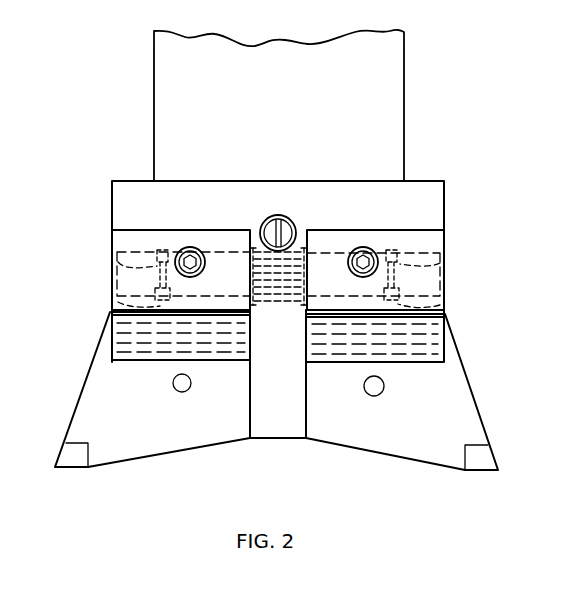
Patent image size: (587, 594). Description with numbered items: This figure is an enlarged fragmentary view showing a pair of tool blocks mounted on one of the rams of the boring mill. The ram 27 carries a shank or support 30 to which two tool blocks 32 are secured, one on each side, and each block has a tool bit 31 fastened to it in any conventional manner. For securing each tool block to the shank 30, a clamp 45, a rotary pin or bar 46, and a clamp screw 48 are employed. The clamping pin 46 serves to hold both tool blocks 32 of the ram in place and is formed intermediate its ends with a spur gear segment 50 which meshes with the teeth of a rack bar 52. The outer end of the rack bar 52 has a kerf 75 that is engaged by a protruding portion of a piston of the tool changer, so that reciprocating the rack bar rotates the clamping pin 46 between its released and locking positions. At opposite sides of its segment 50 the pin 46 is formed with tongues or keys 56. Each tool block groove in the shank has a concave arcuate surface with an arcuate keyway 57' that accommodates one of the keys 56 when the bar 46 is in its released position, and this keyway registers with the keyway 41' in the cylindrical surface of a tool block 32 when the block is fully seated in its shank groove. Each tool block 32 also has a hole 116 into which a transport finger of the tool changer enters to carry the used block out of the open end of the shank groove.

The ram 27 is at (398, 128).
The clamp 45 is at (112, 238).
The rotary pin or bar 46 is at (440, 243).
The clamp screw 48 is at (203, 270).
The tongues or keys 56 is at (162, 250).
The arcuate keyway 57' is at (279, 268).
The arcuate groove or keyway 41' is at (276, 312).
The rack bar 52 is at (298, 212).
The kerf 75 is at (262, 222).
The spur gear segment 50 is at (279, 308).
The shank or support 30 is at (284, 428).
The tool block 32 is at (75, 402).
The tool bit 31 is at (83, 470).
The hole 116 is at (185, 390).